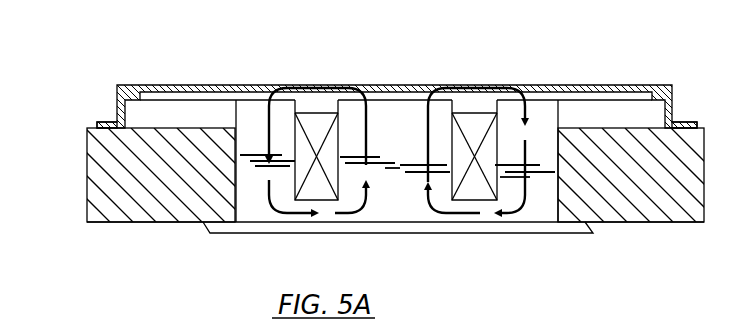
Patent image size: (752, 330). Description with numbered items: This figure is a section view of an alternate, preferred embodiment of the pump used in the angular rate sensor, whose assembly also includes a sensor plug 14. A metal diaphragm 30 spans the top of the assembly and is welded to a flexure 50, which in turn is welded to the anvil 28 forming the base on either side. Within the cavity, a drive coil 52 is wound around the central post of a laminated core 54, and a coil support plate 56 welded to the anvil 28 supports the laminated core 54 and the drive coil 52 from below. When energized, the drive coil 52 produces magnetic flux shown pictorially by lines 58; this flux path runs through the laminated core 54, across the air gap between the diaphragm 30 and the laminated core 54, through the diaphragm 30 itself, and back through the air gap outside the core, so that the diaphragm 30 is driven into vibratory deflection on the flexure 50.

The sensor plug 14 is at (88, 195).
The pump anvil 28 is at (643, 222).
The pump diaphragm 30 is at (240, 85).
The flexure 50 is at (118, 112).
The drive coil 52 is at (298, 136).
The laminated core 54 is at (235, 115).
The coil support plate 56 is at (438, 233).
The magnetic flux lines 58 is at (348, 87).